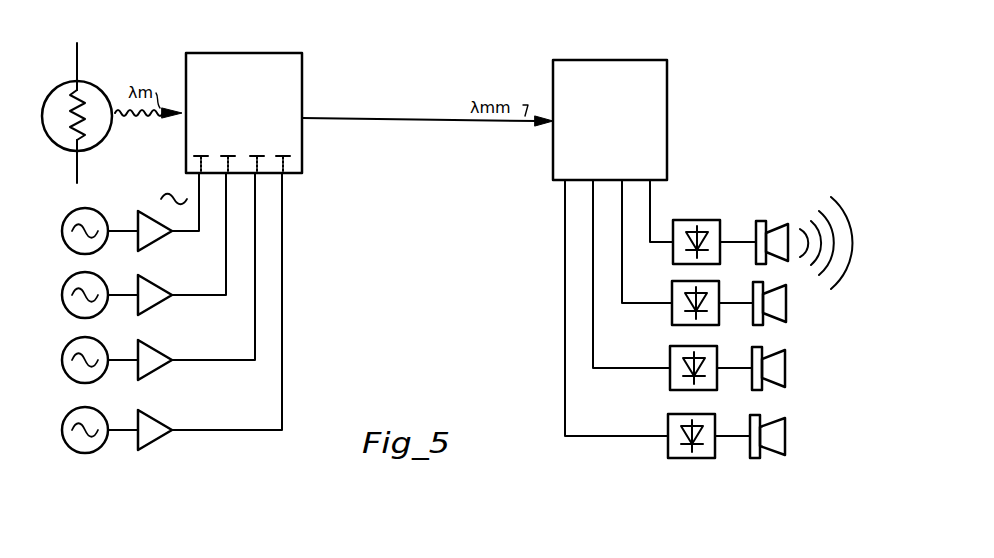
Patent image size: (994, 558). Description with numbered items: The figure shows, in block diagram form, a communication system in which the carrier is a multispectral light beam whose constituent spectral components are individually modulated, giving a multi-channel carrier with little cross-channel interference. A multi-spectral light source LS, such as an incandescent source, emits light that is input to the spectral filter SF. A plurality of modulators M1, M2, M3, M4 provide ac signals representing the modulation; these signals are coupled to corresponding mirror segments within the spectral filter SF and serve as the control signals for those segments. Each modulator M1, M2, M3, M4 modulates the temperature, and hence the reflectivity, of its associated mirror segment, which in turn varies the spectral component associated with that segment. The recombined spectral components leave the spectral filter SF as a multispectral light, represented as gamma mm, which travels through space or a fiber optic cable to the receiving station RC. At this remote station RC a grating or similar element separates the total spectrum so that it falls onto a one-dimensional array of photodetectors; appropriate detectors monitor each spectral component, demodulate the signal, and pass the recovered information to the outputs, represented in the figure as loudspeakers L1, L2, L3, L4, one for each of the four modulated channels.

The multi-spectral light source LS is at (54, 91).
The spectral filter SF is at (244, 87).
The receiving station RC is at (610, 105).
The modulator M1 is at (62, 222).
The modulator M2 is at (62, 286).
The modulator M3 is at (62, 351).
The modulator M4 is at (62, 421).
The loudspeaker L1 is at (779, 222).
The loudspeaker L2 is at (788, 315).
The loudspeaker L3 is at (787, 377).
The loudspeaker L4 is at (787, 446).